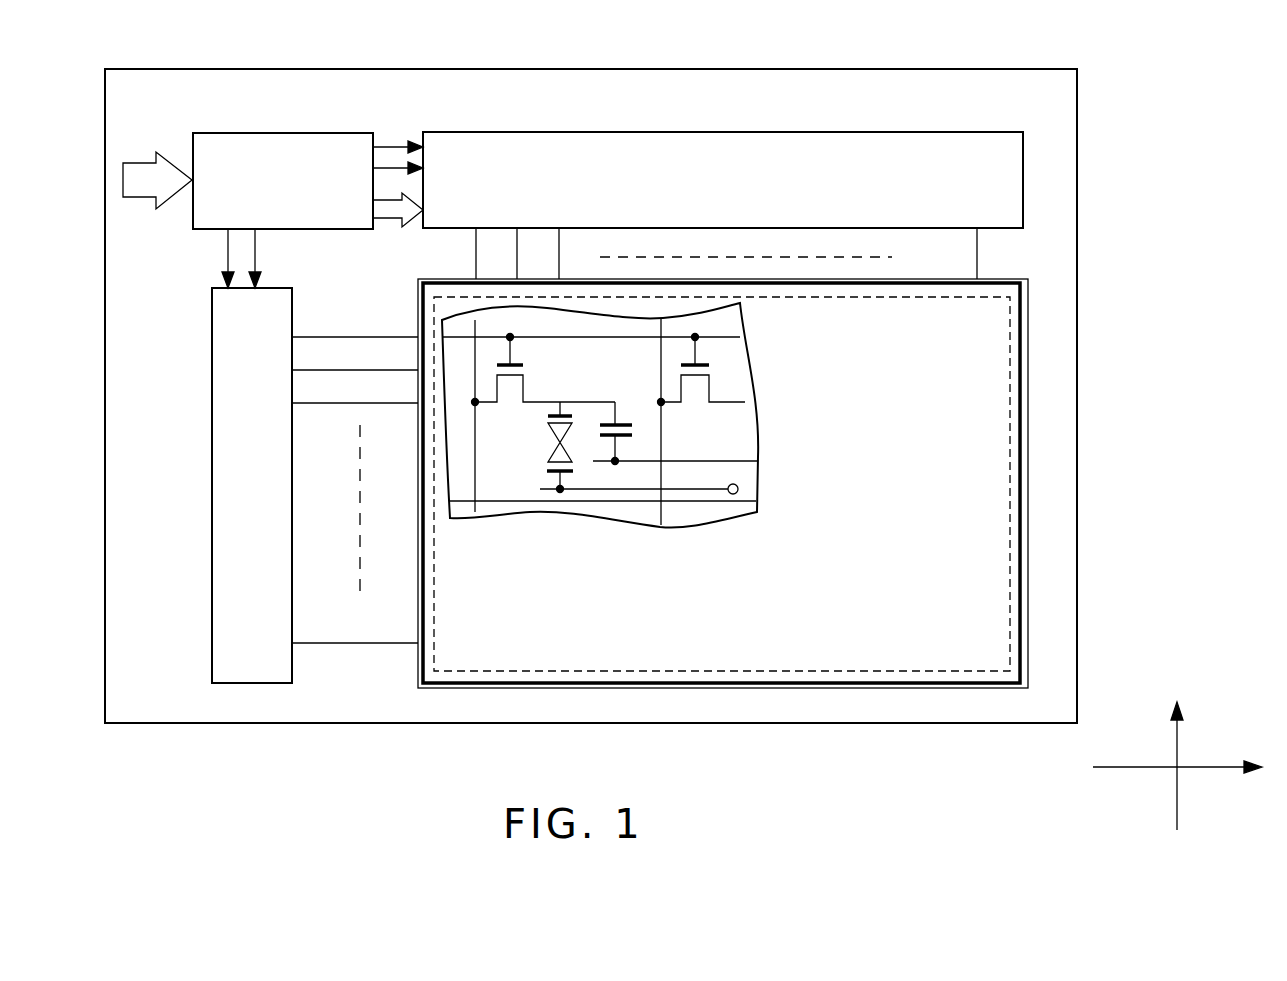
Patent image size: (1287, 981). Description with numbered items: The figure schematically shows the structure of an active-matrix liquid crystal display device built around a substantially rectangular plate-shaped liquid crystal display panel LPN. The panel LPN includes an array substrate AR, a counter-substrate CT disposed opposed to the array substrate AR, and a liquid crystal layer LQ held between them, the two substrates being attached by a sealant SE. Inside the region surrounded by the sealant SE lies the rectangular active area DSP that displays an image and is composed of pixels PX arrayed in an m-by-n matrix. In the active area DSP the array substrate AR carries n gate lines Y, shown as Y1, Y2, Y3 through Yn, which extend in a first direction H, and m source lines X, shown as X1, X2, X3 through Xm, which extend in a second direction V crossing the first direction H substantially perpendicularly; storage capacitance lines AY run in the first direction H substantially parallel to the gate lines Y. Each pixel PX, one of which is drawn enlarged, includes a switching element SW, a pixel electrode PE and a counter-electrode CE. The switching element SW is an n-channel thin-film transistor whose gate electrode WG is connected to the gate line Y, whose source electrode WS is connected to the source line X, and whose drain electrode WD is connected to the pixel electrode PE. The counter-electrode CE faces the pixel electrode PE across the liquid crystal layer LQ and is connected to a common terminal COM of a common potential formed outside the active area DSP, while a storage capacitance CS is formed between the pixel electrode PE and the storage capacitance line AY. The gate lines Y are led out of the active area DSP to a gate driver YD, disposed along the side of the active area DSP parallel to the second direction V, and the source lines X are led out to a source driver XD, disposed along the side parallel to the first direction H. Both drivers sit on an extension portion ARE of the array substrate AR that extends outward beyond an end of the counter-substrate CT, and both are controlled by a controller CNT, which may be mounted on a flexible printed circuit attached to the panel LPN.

The liquid crystal display panel LPN is at (1115, 315).
The array substrate AR is at (1028, 705).
The counter-substrate CT is at (1028, 433).
The sealant SE is at (1020, 590).
The active area DSP is at (780, 672).
The pixel PX is at (519, 490).
The source driver XD is at (972, 150).
The gate driver YD is at (212, 500).
The controller CNT is at (282, 150).
The extension portion ARE is at (499, 110).
The source line X is at (478, 478).
The gate line Y is at (718, 338).
The source line X1 is at (459, 253).
The source line X2 is at (500, 253).
The source line X3 is at (542, 253).
The source line Xm is at (956, 253).
The gate line Y1 is at (355, 324).
The gate line Y2 is at (355, 358).
The gate line Y3 is at (355, 392).
The gate line Yn is at (355, 630).
The switching element SW is at (547, 409).
The gate electrode WG is at (513, 350).
The source electrode WS is at (490, 403).
The drain electrode WD is at (527, 403).
The pixel electrode PE is at (573, 415).
The counter-electrode CE is at (552, 475).
The liquid crystal layer LQ is at (592, 477).
The storage capacitance CS is at (651, 432).
The storage capacitance line AY is at (742, 460).
The common terminal COM is at (740, 486).
The second direction V is at (1178, 751).
The first direction H is at (1189, 769).